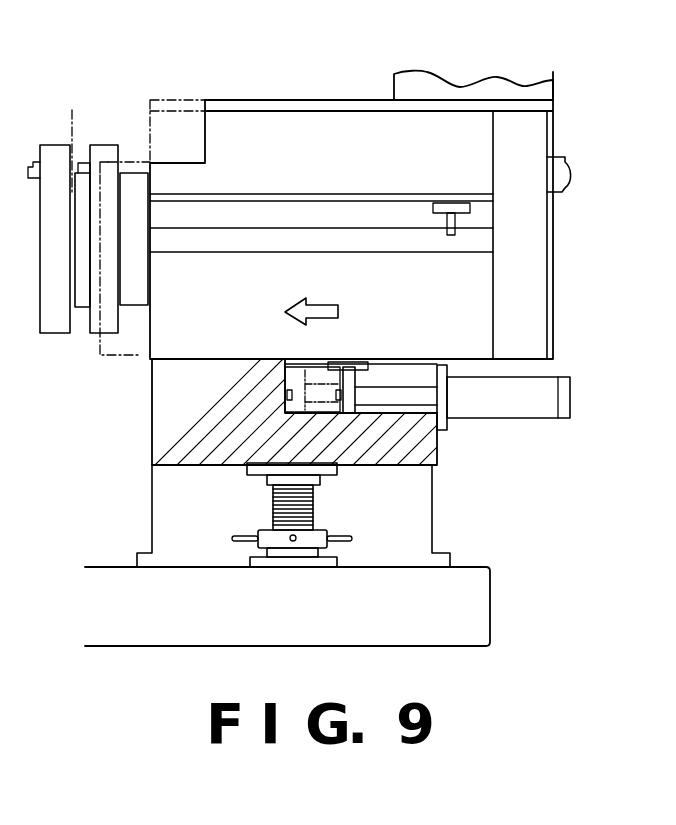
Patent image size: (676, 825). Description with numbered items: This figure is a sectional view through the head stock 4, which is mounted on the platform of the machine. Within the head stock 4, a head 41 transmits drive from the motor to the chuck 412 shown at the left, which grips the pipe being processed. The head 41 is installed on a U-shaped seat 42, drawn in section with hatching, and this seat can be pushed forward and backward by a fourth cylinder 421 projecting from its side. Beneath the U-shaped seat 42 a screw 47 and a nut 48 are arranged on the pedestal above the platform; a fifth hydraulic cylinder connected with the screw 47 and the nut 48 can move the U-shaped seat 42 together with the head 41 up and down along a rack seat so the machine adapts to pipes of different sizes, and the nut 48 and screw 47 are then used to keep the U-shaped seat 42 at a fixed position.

The head stock 4 is at (362, 66).
The head 41 is at (281, 125).
The chuck 412 is at (103, 143).
The U-shaped seat 42 is at (163, 418).
The fourth cylinder 421 is at (498, 418).
The screw 47 is at (318, 508).
The nut 48 is at (268, 530).